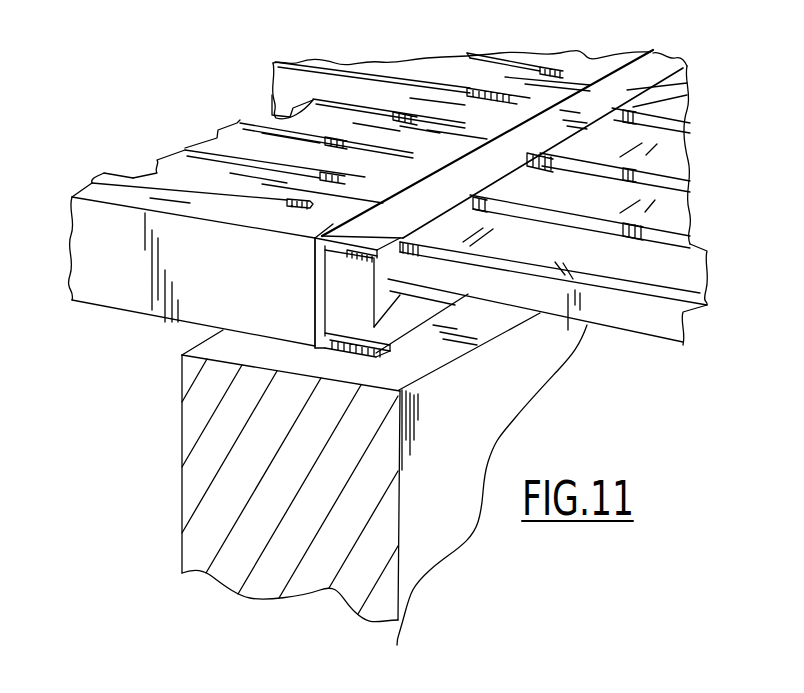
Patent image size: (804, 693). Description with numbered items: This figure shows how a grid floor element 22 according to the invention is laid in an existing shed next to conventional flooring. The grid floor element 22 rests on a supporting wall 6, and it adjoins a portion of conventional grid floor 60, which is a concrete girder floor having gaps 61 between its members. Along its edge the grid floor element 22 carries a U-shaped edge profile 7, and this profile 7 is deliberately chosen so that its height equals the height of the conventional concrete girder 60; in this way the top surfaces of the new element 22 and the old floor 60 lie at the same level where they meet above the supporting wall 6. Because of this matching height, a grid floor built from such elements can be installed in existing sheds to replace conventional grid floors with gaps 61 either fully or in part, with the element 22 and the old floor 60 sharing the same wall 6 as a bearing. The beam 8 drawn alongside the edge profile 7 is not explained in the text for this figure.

The support block 6 is at (195, 483).
The channel bracket 7 is at (340, 250).
The beam 8 is at (620, 322).
The bottom board 22 is at (667, 346).
The beam 60 is at (132, 293).
The groove 61 is at (205, 143).